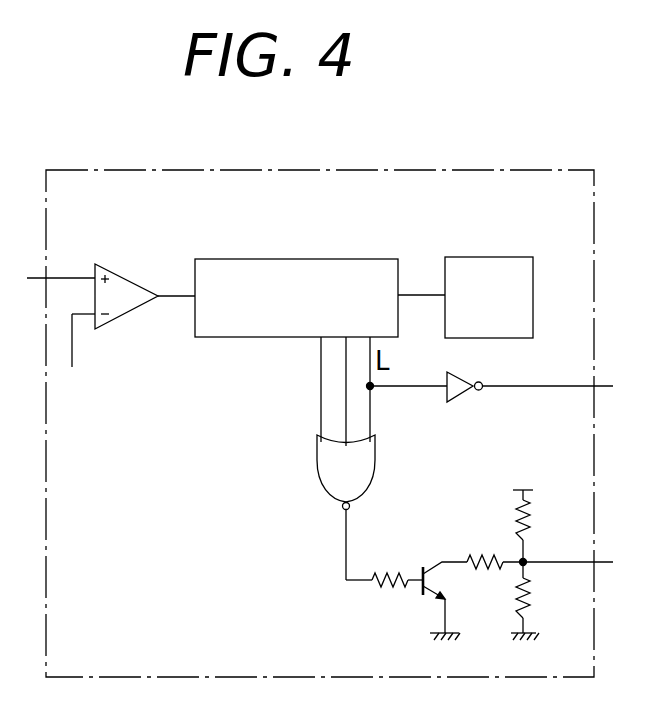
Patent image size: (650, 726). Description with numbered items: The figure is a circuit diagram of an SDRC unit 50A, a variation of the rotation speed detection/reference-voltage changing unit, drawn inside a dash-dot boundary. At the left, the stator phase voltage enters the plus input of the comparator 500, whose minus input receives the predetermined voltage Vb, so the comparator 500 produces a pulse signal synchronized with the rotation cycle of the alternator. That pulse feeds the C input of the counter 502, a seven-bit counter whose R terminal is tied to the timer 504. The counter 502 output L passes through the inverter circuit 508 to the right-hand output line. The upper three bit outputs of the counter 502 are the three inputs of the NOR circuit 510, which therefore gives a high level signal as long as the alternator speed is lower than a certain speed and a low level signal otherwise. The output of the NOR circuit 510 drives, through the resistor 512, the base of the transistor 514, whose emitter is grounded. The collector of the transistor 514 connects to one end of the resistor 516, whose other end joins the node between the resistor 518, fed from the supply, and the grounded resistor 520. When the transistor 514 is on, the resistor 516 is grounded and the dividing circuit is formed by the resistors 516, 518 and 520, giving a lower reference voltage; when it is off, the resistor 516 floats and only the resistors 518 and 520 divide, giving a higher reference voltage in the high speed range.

The SDRC unit 50A is at (210, 170).
The comparator 500 is at (113, 268).
The counter 502 is at (213, 258).
The timer 504 is at (478, 257).
The inverter circuit 508 is at (465, 398).
The NOR circuit 510 is at (375, 462).
The resistor 512 is at (388, 572).
The transistor 514 is at (420, 590).
The resistor 516 is at (478, 555).
The resistor 518 is at (533, 527).
The resistor 520 is at (537, 592).